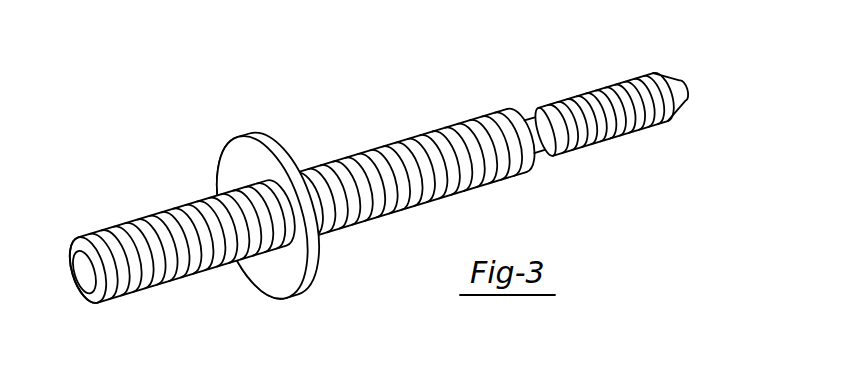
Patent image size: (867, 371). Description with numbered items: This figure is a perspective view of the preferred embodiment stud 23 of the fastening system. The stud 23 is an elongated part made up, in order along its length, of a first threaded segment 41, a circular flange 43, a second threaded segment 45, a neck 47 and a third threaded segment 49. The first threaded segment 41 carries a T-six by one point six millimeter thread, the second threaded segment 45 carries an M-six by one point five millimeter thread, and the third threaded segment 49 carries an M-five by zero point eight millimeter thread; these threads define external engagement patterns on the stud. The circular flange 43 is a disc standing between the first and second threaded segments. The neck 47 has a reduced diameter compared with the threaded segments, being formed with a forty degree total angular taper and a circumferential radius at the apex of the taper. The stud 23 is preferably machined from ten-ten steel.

The stud 23 is at (411, 162).
The first threaded segment 41 is at (150, 248).
The circular flange 43 is at (238, 156).
The second threaded segment 45 is at (399, 192).
The neck 47 is at (528, 116).
The third threaded segment 49 is at (676, 82).